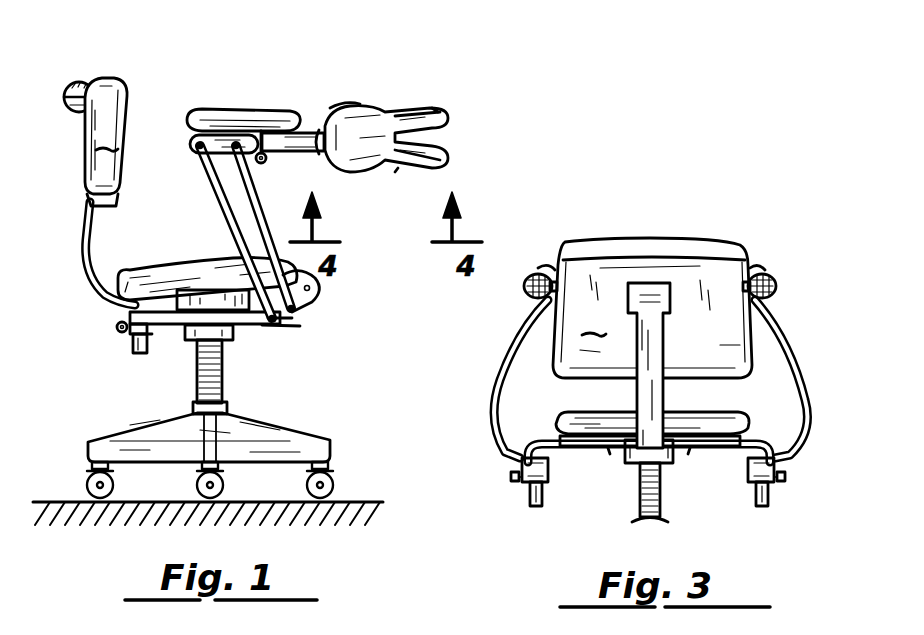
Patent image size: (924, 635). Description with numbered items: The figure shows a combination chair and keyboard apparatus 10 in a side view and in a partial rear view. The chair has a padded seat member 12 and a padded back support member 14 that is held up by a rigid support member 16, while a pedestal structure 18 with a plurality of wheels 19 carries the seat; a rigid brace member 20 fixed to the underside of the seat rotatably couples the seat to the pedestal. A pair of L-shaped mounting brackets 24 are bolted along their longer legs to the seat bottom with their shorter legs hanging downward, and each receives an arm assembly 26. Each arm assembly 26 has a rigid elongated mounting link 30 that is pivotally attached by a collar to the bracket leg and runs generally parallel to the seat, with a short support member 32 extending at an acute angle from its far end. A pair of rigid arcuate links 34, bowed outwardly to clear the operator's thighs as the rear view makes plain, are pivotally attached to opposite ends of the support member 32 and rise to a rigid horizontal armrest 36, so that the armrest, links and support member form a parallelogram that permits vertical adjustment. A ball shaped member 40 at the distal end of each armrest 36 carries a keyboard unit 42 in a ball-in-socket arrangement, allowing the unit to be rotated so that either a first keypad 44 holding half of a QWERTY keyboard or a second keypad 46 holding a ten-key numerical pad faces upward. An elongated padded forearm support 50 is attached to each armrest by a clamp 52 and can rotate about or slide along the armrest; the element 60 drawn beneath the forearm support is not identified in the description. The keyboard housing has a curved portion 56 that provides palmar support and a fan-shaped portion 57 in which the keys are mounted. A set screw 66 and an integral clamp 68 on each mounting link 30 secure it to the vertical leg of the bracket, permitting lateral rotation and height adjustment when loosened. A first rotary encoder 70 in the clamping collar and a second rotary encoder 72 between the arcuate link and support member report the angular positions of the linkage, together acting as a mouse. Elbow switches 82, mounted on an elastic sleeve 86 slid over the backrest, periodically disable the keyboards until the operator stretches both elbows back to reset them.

In FIG. 1, the combination chair and keyboard apparatus 10 is at (168, 58).
In FIG. 3, the combination chair and keyboard apparatus 10 is at (660, 222).
In FIG. 1, the padded seat member 12 is at (155, 265).
In FIG. 3, the padded seat member 12 is at (568, 412).
In FIG. 1, the padded back support member 14 is at (85, 160).
In FIG. 3, the padded back support member 14 is at (712, 243).
In FIG. 1, the rigid support member 16 is at (86, 221).
In FIG. 3, the rigid support member 16 is at (668, 379).
In FIG. 1, the pedestal structure 18 is at (224, 372).
In FIG. 3, the pedestal structure 18 is at (660, 505).
In FIG. 1, the wheels 19 is at (338, 479).
In FIG. 1, the rigid brace member 20 is at (198, 300).
In FIG. 3, the rigid brace member 20 is at (608, 454).
In FIG. 1, the L-shaped mounting bracket 24 is at (133, 348).
In FIG. 3, the L-shaped mounting bracket 24 is at (586, 452).
In FIG. 1, the arm assembly 26 is at (253, 92).
In FIG. 1, the mounting link 30 is at (262, 330).
In FIG. 3, the mounting link 30 is at (522, 452).
In FIG. 1, the support member 32 is at (298, 320).
In FIG. 1, the arcuate link 34 is at (248, 192).
In FIG. 3, the arcuate link 34 is at (498, 378).
In FIG. 1, the armrest 36 is at (305, 131).
In FIG. 1, the ball shaped member 40 is at (318, 128).
In FIG. 1, the keyboard unit 42 is at (395, 96).
In FIG. 3, the keyboard unit 42 is at (512, 287).
In FIG. 1, the first keypad 44 is at (436, 120).
In FIG. 1, the second keypad 46 is at (442, 164).
In FIG. 1, the padded forearm support 50 is at (222, 110).
In FIG. 3, the padded forearm support 50 is at (548, 262).
In FIG. 1, the clamp 52 is at (268, 162).
In FIG. 1, the curved portion 56 is at (340, 108).
In FIG. 1, the fan-shaped portion 57 is at (438, 112).
In FIG. 1, the pivot block 60 is at (188, 140).
In FIG. 1, the set screw 66 is at (117, 325).
In FIG. 3, the set screw 66 is at (511, 477).
In FIG. 1, the clamp 68 is at (152, 336).
In FIG. 3, the clamp 68 is at (548, 468).
In FIG. 1, the first rotary encoder 70 is at (130, 334).
In FIG. 1, the second rotary encoder 72 is at (300, 326).
In FIG. 1, the elbow switch 82 is at (70, 82).
In FIG. 1, the elastic sleeve 86 is at (104, 137).
In FIG. 3, the elastic sleeve 86 is at (591, 322).